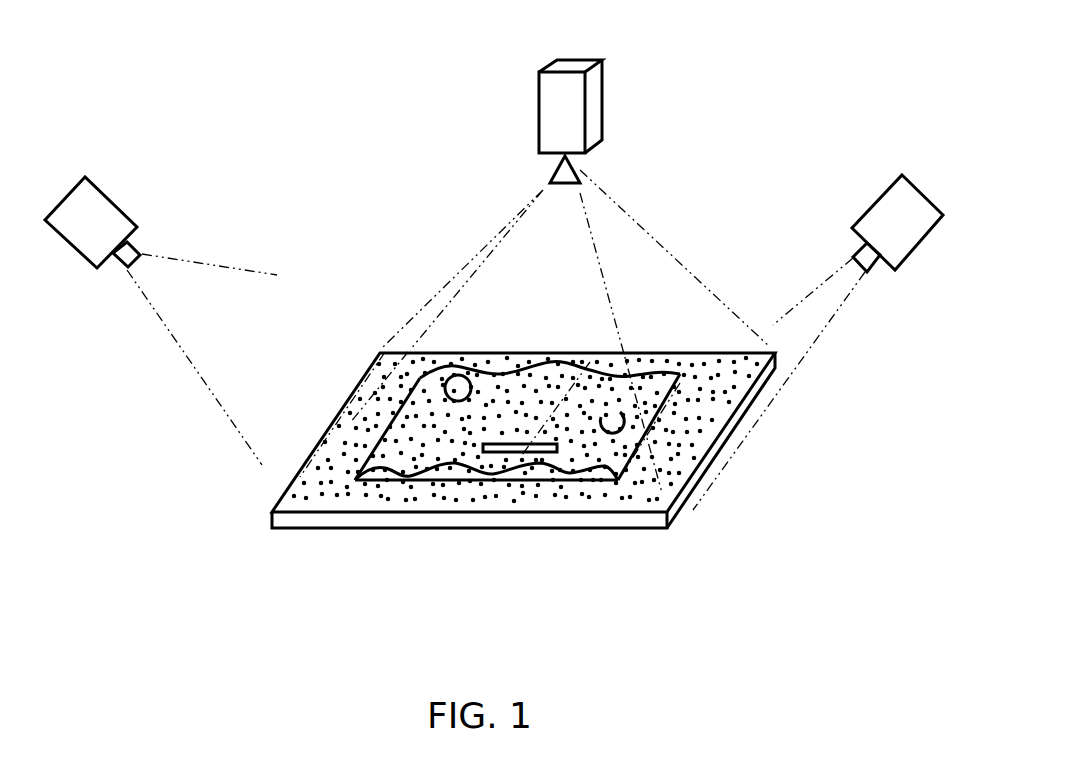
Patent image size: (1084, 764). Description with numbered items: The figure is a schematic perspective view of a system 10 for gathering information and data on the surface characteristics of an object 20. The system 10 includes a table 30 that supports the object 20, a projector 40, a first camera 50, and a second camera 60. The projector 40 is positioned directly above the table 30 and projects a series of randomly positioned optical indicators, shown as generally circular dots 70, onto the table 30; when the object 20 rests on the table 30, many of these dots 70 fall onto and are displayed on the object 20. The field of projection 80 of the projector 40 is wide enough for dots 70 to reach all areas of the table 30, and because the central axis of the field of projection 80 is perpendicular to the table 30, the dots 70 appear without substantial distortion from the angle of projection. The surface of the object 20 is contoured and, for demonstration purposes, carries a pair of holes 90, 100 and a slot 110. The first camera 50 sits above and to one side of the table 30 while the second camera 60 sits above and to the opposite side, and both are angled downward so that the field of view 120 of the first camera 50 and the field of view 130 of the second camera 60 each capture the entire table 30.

The system 10 is at (290, 135).
The object 20 is at (488, 375).
The table 30 is at (680, 508).
The projector 40 is at (567, 62).
The first camera 50 is at (99, 213).
The second camera 60 is at (884, 213).
The dots 70 is at (703, 427).
The field of projection 80 is at (533, 267).
The hole 90 is at (458, 388).
The hole 100 is at (603, 413).
The slot 110 is at (515, 450).
The field of view 120 is at (197, 302).
The field of view 130 is at (812, 322).